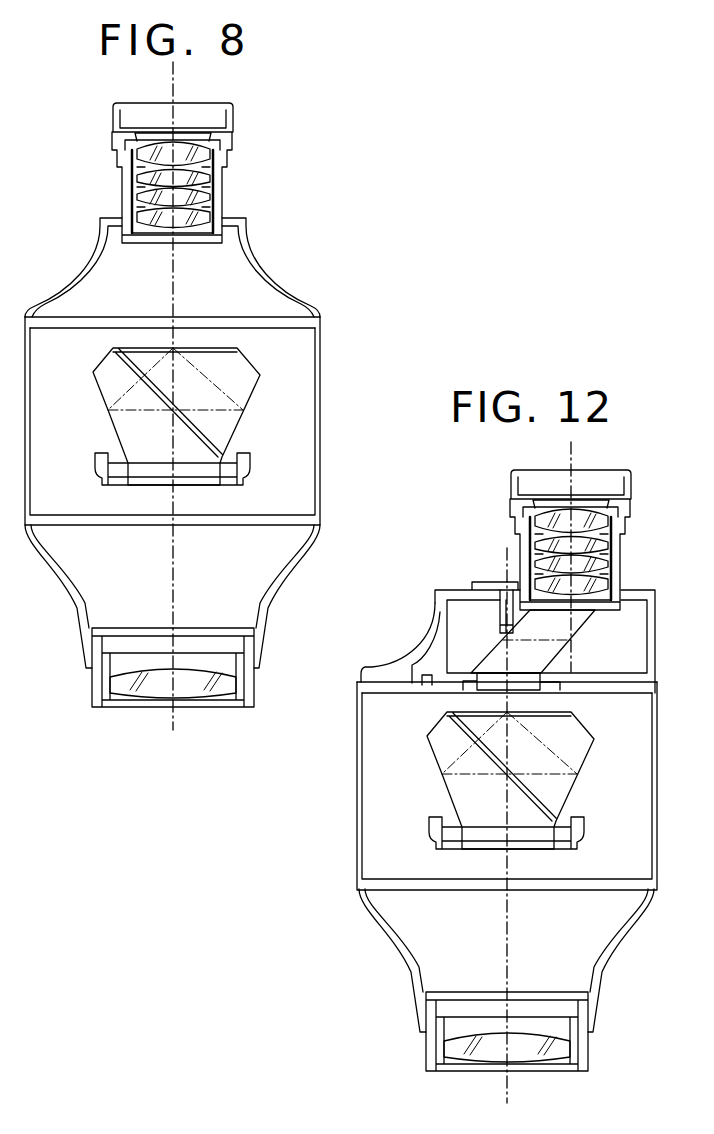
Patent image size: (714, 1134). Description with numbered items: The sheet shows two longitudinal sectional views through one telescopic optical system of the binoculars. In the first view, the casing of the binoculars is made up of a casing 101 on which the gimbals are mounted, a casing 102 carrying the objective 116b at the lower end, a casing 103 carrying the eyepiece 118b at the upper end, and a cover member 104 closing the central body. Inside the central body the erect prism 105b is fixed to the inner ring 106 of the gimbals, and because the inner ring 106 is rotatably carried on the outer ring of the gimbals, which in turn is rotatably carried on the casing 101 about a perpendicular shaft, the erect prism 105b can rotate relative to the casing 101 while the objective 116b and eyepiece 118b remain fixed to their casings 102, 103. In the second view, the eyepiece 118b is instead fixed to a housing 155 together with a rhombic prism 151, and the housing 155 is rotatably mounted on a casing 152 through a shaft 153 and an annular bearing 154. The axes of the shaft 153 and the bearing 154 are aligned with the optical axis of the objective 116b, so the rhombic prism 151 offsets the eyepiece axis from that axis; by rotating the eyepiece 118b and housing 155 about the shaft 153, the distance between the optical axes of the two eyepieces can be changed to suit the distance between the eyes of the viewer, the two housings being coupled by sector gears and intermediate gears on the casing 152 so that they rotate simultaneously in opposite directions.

In FIG. 8, the eyepiece 118b is at (187, 153).
In FIG. 12, the eyepiece 118b is at (582, 518).
In FIG. 8, the casing 103 is at (250, 263).
In FIG. 8, the casing 101 is at (278, 324).
In FIG. 8, the erect prism 105b is at (254, 408).
In FIG. 8, the cover member 104 is at (322, 438).
In FIG. 8, the inner ring 106 is at (251, 465).
In FIG. 8, the casing 102 is at (280, 562).
In FIG. 8, the objective 116b is at (208, 686).
In FIG. 12, the housing 155 is at (477, 628).
In FIG. 12, the shaft 153 is at (503, 600).
In FIG. 12, the casing 152 is at (640, 596).
In FIG. 12, the rhombic prism 151 is at (555, 627).
In FIG. 12, the annular bearing 154 is at (543, 686).